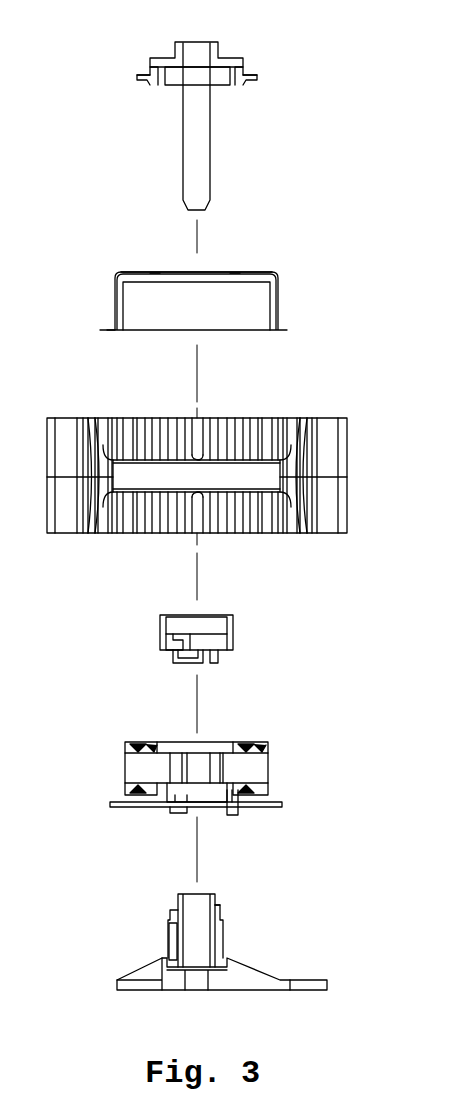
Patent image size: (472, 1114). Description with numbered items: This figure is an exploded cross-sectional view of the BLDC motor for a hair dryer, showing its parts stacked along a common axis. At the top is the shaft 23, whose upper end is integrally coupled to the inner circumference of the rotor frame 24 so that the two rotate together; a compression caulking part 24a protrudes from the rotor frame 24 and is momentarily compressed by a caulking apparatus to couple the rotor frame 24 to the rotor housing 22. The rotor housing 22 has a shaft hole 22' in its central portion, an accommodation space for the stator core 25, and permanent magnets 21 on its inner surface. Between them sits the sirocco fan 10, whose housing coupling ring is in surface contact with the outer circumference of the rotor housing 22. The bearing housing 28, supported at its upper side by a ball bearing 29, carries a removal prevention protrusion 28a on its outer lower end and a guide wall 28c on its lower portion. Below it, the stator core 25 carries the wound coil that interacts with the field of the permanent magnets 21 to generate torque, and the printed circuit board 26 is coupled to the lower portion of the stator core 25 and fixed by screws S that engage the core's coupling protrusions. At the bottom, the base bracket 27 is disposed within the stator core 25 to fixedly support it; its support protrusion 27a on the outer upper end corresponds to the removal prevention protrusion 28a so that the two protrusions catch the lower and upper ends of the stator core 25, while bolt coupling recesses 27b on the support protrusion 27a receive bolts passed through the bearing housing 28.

The sirocco fan 10 is at (305, 418).
The permanent magnets 21 is at (272, 305).
The rotor housing 22 is at (230, 255).
The shaft hole 22' is at (174, 252).
The shaft 23 is at (202, 155).
The rotor frame 24 is at (230, 60).
The compression caulking part 24a is at (155, 77).
The stator core 25 is at (258, 773).
The printed circuit board 26 is at (278, 805).
The base bracket 27 is at (223, 947).
The support protrusion 27a is at (223, 922).
The bolt coupling recesses 27b is at (175, 938).
The bearing housing 28 is at (235, 630).
The removal prevention protrusion 28a is at (230, 650).
The guide wall 28c is at (170, 658).
The ball bearing 29 is at (215, 83).
The screws S is at (232, 812).